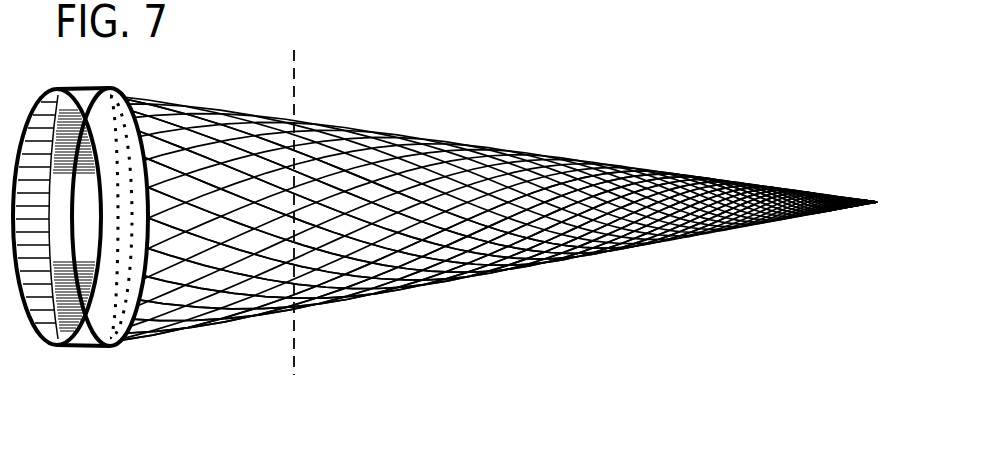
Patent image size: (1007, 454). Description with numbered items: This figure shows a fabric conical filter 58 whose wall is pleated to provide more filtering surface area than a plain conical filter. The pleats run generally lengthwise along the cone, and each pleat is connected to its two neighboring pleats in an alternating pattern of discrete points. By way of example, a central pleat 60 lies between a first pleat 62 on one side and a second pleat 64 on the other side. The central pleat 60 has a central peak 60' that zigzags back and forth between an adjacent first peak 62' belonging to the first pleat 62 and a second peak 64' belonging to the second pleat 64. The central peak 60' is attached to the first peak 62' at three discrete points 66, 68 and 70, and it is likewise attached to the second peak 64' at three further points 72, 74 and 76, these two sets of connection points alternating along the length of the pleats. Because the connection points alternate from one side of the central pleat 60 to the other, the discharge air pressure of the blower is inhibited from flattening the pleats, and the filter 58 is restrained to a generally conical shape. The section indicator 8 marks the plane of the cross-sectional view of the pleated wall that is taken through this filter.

The filter 58 is at (573, 158).
The central pleat 60 is at (478, 157).
The central peak 60' is at (438, 165).
The first pleat 62 is at (438, 161).
The first peak 62' is at (438, 157).
The second pleat 64 is at (438, 188).
The second peak 64' is at (438, 191).
The point 66 is at (192, 187).
The point 68 is at (290, 182).
The point 70 is at (405, 190).
The point 72 is at (243, 200).
The point 74 is at (333, 205).
The point 76 is at (423, 200).
The section line 8- 8 is at (318, 380).